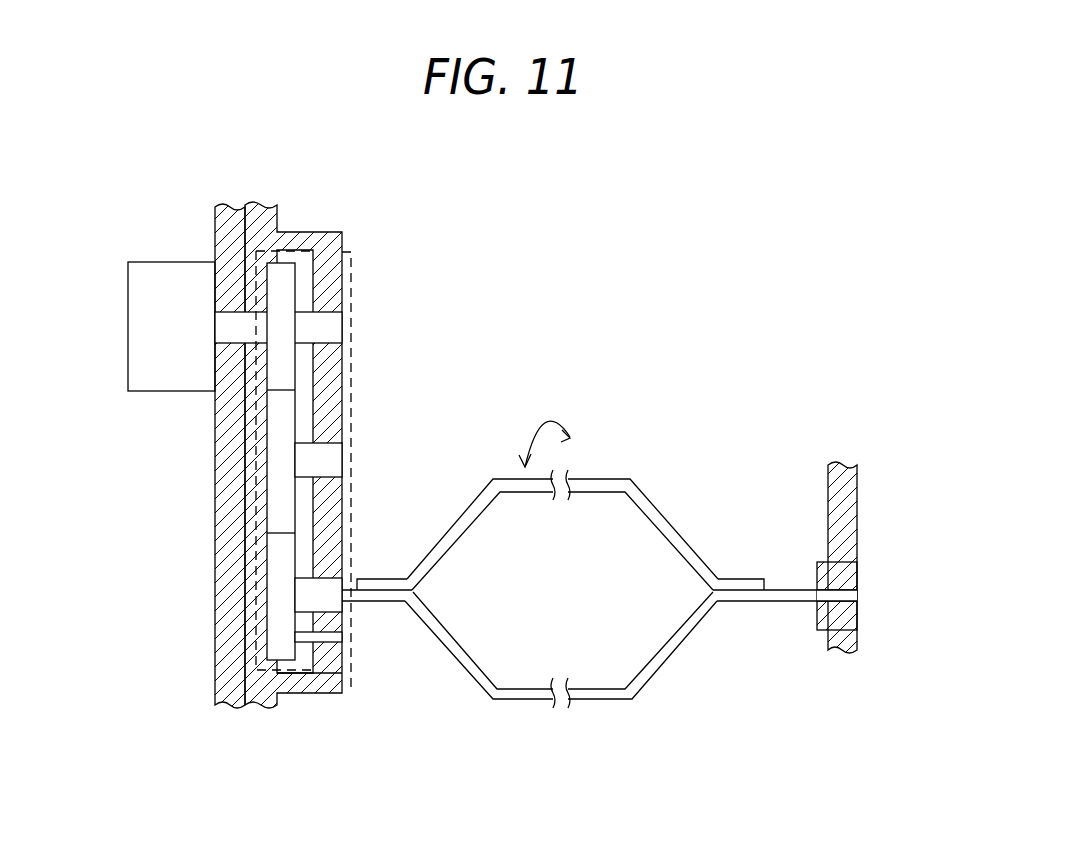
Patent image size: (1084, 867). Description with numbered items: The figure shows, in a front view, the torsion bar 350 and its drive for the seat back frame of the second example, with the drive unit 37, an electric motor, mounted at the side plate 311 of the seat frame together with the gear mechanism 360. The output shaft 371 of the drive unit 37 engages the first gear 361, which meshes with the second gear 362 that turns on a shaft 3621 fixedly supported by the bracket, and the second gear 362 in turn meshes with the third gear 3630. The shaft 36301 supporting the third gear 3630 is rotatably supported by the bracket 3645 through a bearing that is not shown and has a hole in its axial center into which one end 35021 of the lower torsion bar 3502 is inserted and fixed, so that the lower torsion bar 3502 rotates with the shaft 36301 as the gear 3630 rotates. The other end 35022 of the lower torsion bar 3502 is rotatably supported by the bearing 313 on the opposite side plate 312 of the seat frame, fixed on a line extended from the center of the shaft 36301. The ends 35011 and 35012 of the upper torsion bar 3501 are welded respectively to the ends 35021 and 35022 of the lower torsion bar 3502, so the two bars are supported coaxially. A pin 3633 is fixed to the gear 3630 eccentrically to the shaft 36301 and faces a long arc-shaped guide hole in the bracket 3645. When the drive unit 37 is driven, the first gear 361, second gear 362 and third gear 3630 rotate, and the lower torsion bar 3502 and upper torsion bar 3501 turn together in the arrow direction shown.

The side plate 311 is at (220, 228).
The side plate 312 is at (848, 500).
The bearing 313 is at (857, 607).
The drive unit 37 is at (129, 369).
The output shaft 371 is at (230, 328).
The torsion bar 350 is at (599, 544).
The upper torsion bar 3501 is at (612, 478).
The lower torsion bar 3502 is at (655, 648).
The end of upper torsion bar 35011 is at (385, 578).
The end of upper torsion bar 35012 is at (738, 581).
The end of lower torsion bar 35021 is at (377, 602).
The end of lower torsion bar 35022 is at (745, 603).
The gear mechanism 360 is at (352, 268).
The first gear 361 is at (282, 327).
The second gear 362 is at (283, 415).
The shaft 3621 is at (323, 460).
The third gear 3630 is at (277, 543).
The shaft 36301 is at (327, 600).
The pin 3633 is at (300, 637).
The bracket 3645 is at (293, 693).